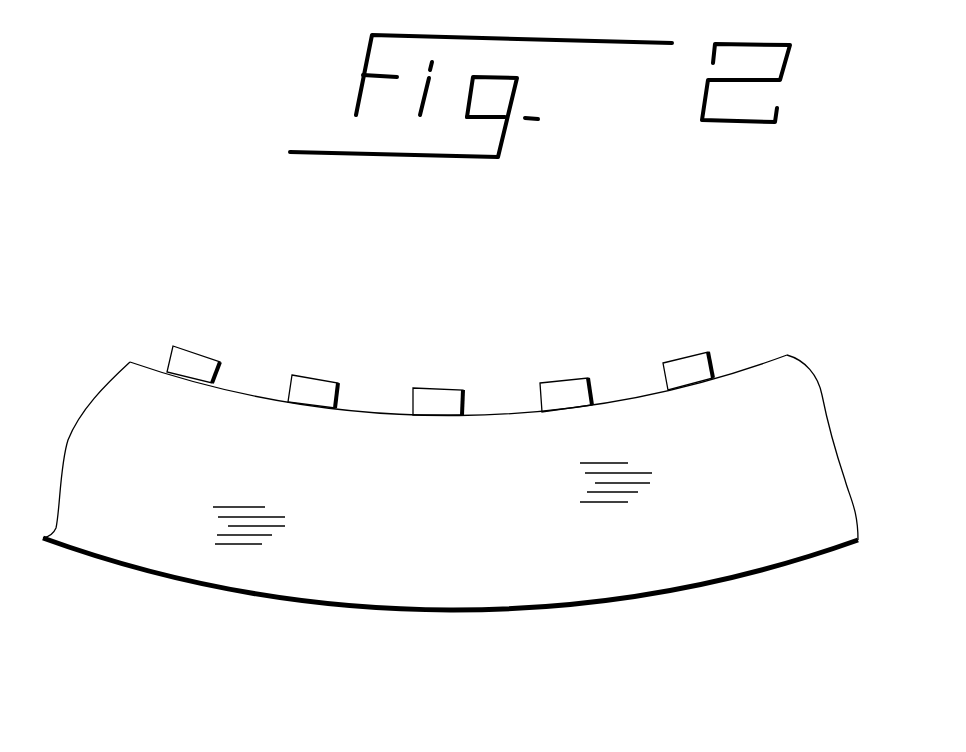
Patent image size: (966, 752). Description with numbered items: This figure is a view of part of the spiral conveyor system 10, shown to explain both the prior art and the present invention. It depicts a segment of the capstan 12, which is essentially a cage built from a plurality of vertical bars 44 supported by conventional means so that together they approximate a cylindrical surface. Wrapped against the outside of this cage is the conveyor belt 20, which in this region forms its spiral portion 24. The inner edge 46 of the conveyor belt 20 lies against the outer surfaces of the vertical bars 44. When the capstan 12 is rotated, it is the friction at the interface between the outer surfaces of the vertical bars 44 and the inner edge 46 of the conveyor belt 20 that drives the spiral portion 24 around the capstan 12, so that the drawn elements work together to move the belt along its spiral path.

The spiral conveyor system 10 is at (830, 321).
The capstan 12 is at (692, 363).
The conveyor belt 20 is at (843, 500).
The spiral portion 24 is at (803, 395).
The vertical bars 44 is at (568, 385).
The inner edge 46 is at (382, 410).